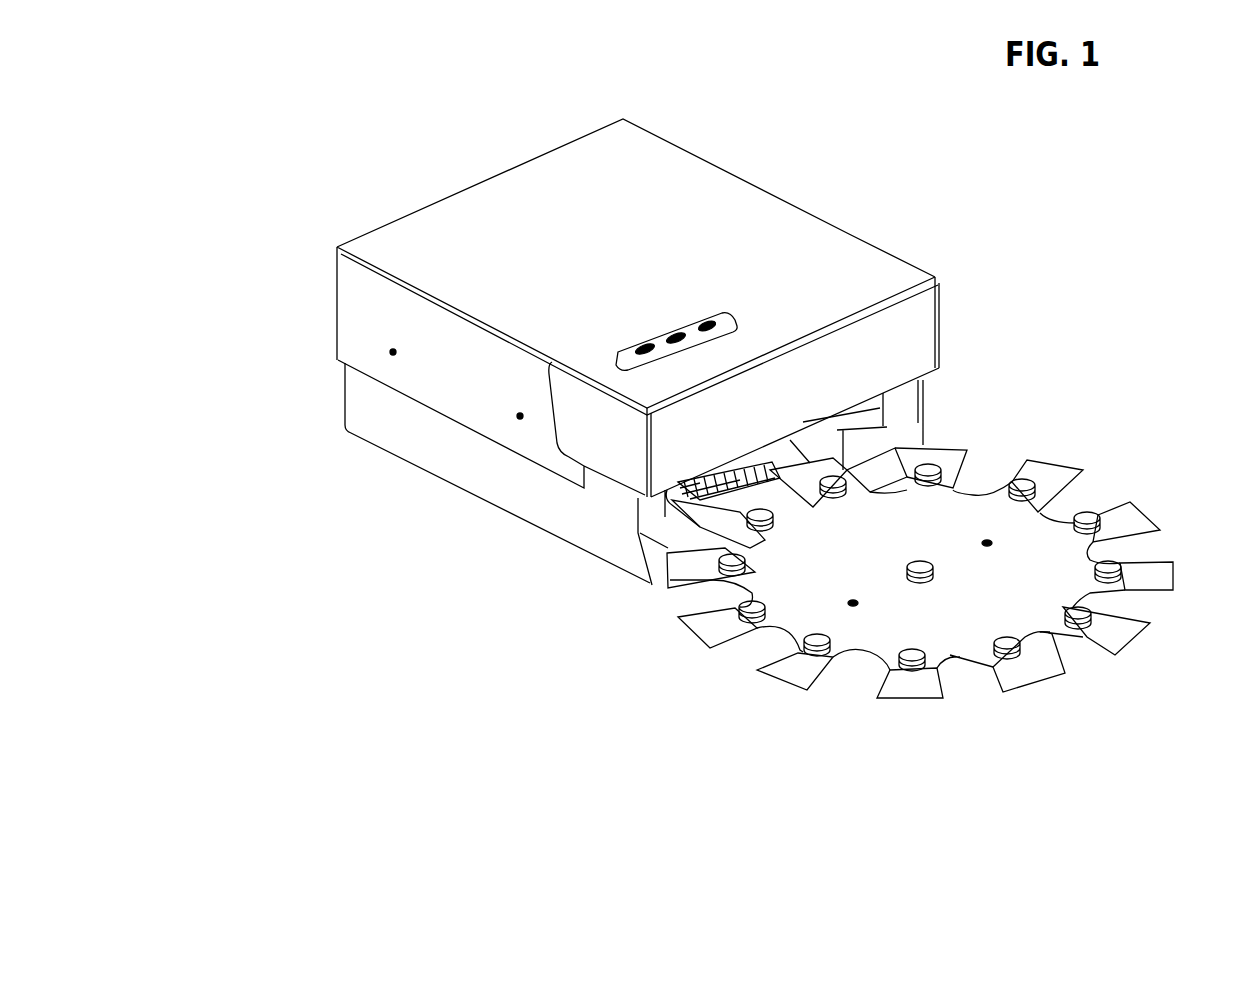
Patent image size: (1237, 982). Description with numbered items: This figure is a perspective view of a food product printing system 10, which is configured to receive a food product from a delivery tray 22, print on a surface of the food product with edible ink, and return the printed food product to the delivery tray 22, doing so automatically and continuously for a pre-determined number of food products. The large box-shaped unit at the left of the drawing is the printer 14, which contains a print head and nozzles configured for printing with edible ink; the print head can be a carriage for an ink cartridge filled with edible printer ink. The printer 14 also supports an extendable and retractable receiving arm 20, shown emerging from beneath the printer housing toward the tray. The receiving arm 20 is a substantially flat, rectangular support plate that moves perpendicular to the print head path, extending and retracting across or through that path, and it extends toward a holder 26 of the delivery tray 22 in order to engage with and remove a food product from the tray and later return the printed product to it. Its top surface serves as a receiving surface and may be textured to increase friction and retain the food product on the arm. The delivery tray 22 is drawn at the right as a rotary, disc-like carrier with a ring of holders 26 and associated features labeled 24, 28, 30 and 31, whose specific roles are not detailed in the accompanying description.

The printing system 10 is at (290, 208).
The printer 14 is at (970, 297).
The receiving arm 20 is at (715, 497).
The delivery tray 22 is at (949, 579).
The vane 24 is at (789, 669).
The holder 26 is at (1131, 470).
The rim 28 is at (968, 685).
The cup 30 is at (1028, 658).
The central cup 31 is at (934, 539).